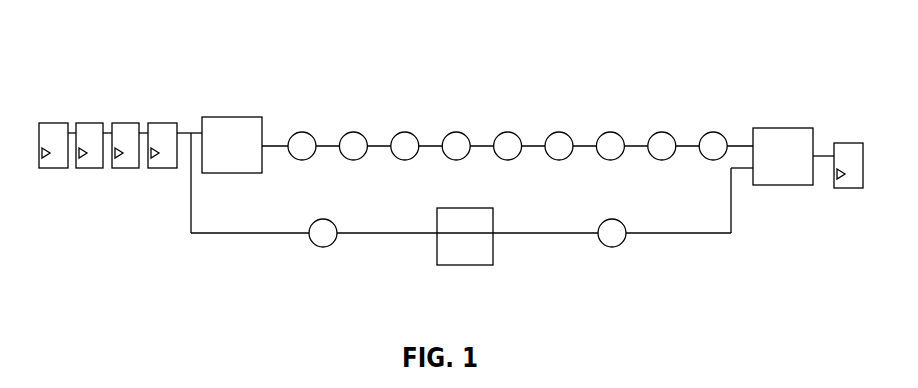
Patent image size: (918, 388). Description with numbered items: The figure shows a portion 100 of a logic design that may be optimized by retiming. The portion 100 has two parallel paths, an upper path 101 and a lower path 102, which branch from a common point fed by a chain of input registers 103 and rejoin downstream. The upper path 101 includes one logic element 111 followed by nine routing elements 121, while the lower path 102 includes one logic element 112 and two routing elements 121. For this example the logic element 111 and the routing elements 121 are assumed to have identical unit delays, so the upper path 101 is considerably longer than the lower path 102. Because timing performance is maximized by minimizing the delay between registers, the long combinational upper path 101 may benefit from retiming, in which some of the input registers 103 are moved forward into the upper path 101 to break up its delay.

The portion of a logic design 100 is at (101, 47).
The upper path 101 is at (425, 170).
The lower path 102 is at (541, 207).
The input registers 103 is at (88, 168).
The logic element 111 is at (232, 117).
The logic element 112 is at (465, 265).
The routing elements 121 is at (361, 132).